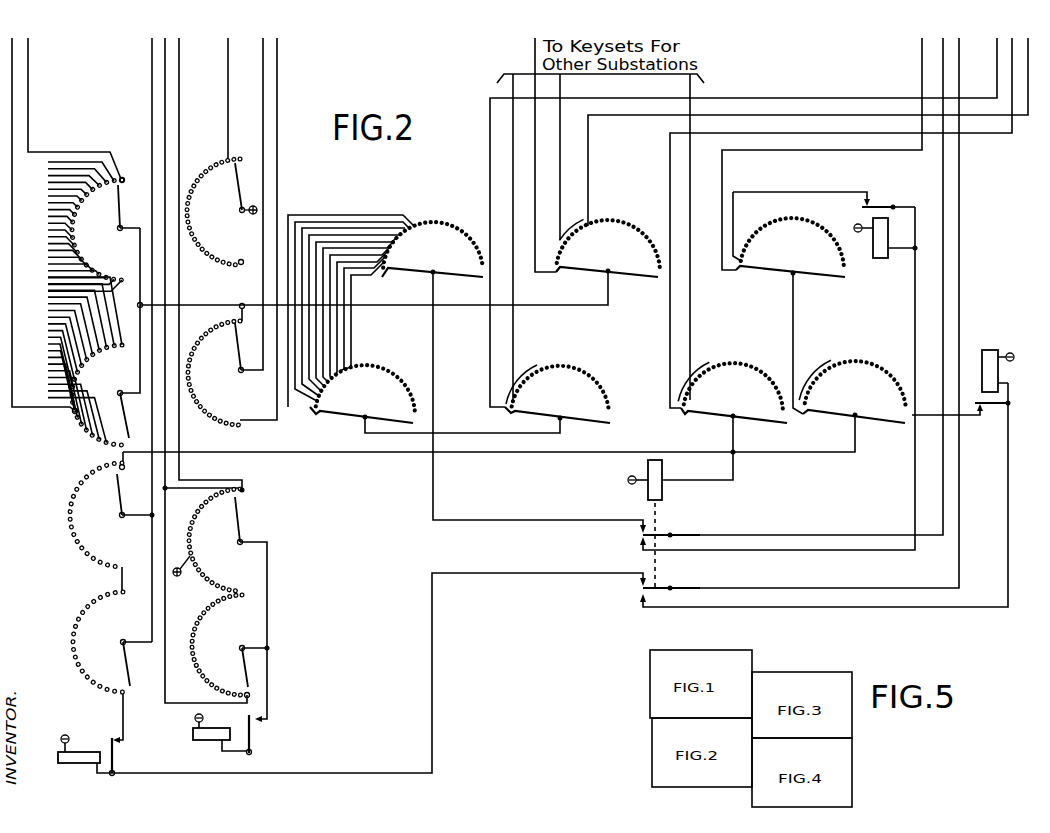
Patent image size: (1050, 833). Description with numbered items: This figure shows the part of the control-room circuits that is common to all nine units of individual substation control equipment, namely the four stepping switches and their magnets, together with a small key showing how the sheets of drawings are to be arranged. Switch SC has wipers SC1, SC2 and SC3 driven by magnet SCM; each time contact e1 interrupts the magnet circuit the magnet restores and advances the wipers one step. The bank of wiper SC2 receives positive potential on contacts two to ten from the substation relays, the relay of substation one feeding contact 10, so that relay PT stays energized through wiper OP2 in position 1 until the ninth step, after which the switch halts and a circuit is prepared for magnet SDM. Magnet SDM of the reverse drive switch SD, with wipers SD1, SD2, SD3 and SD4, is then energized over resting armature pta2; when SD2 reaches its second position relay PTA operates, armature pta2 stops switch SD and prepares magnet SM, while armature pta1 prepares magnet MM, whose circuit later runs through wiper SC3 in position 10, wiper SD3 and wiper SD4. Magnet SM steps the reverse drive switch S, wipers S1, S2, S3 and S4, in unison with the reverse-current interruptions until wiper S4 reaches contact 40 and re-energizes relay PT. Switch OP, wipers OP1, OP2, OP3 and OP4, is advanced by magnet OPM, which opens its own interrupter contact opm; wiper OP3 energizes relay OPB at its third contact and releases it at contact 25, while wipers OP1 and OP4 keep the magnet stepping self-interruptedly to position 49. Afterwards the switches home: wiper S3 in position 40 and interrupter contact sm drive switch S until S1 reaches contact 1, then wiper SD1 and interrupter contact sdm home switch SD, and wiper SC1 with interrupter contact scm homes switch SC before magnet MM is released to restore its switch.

The wiper S1 is at (97, 515).
The wiper S2 is at (85, 226).
The wiper S3 is at (101, 642).
The wiper S4 is at (88, 361).
The wiper OP1 is at (209, 540).
The wiper OP2 is at (216, 365).
The wiper OP3 is at (222, 212).
The wiper OP4 is at (220, 645).
The wiper SC1 is at (790, 247).
The wiper SC2 is at (608, 248).
The wiper SC3 is at (385, 311).
The wiper SD1 is at (889, 391).
The wiper SD2 is at (732, 392).
The wiper SD3 is at (362, 394).
The wiper SD4 is at (557, 394).
The magnet SCM is at (887, 258).
The interrupter contact scm is at (878, 207).
The magnet SDM is at (1005, 332).
The interrupter contact sdm is at (990, 408).
The relay PTA is at (662, 488).
The armature pta1 is at (665, 532).
The armature pta2 is at (665, 585).
The magnet SM is at (90, 765).
The interrupter contact sm is at (113, 752).
The magnet OPM is at (216, 742).
The interrupter contact opm is at (250, 735).
The position 1 is at (122, 174).
The contact 10 is at (486, 252).
The contact 25 is at (247, 271).
The contact 40 is at (85, 414).
The position 49 is at (239, 690).